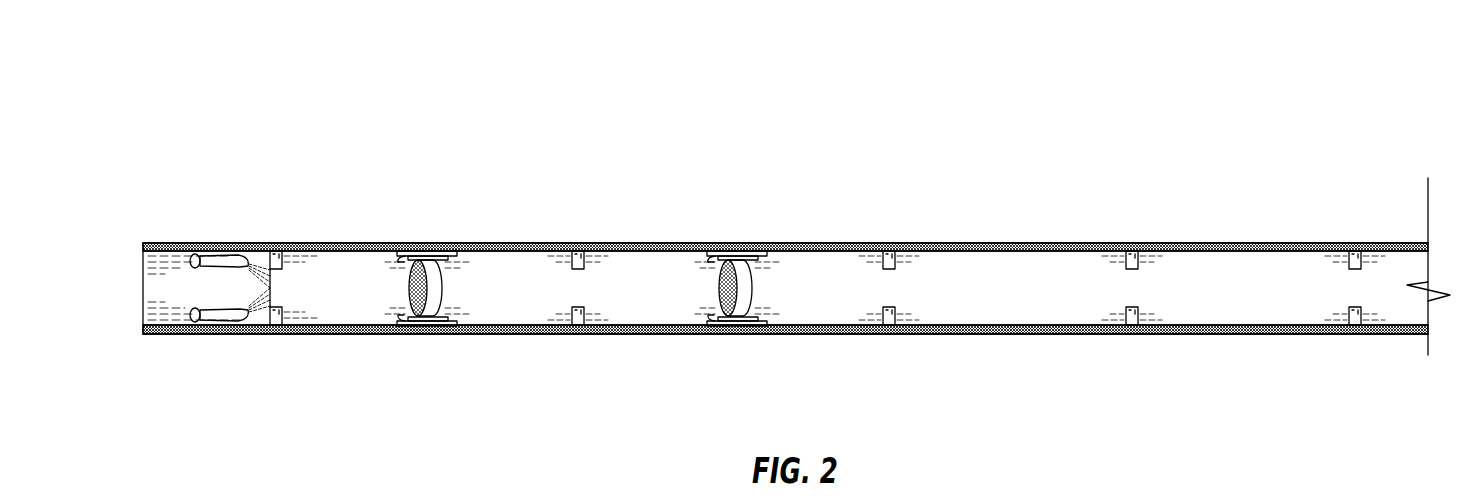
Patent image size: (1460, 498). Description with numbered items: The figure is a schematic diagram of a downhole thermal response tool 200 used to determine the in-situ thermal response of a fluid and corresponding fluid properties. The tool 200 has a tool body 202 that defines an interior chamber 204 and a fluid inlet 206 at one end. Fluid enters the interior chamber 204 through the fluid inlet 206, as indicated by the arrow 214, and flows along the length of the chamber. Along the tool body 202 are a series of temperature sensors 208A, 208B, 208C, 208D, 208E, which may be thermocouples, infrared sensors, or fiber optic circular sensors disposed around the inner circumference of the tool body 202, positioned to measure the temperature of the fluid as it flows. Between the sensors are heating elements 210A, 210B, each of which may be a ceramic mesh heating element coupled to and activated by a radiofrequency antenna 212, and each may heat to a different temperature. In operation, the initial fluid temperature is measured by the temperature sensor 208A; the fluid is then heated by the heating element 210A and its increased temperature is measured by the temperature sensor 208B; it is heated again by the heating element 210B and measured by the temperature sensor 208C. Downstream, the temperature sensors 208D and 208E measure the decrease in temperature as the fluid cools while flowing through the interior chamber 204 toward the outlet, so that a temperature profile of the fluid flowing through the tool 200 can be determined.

The downhole thermal response tool 200 is at (309, 66).
The tool body 202 is at (1012, 334).
The interior chamber 204 is at (1020, 273).
The fluid inlet 206 is at (150, 282).
The temperature sensor 208A is at (276, 327).
The temperature sensor 208B is at (578, 326).
The temperature sensor 208C is at (890, 326).
The temperature sensor 208D is at (1132, 326).
The temperature sensor 208E is at (1355, 326).
The heating element 210A is at (409, 288).
The heating element 210B is at (719, 288).
The radiofrequency (RF) antenna 212 is at (420, 327).
The arrow 214 is at (740, 326).